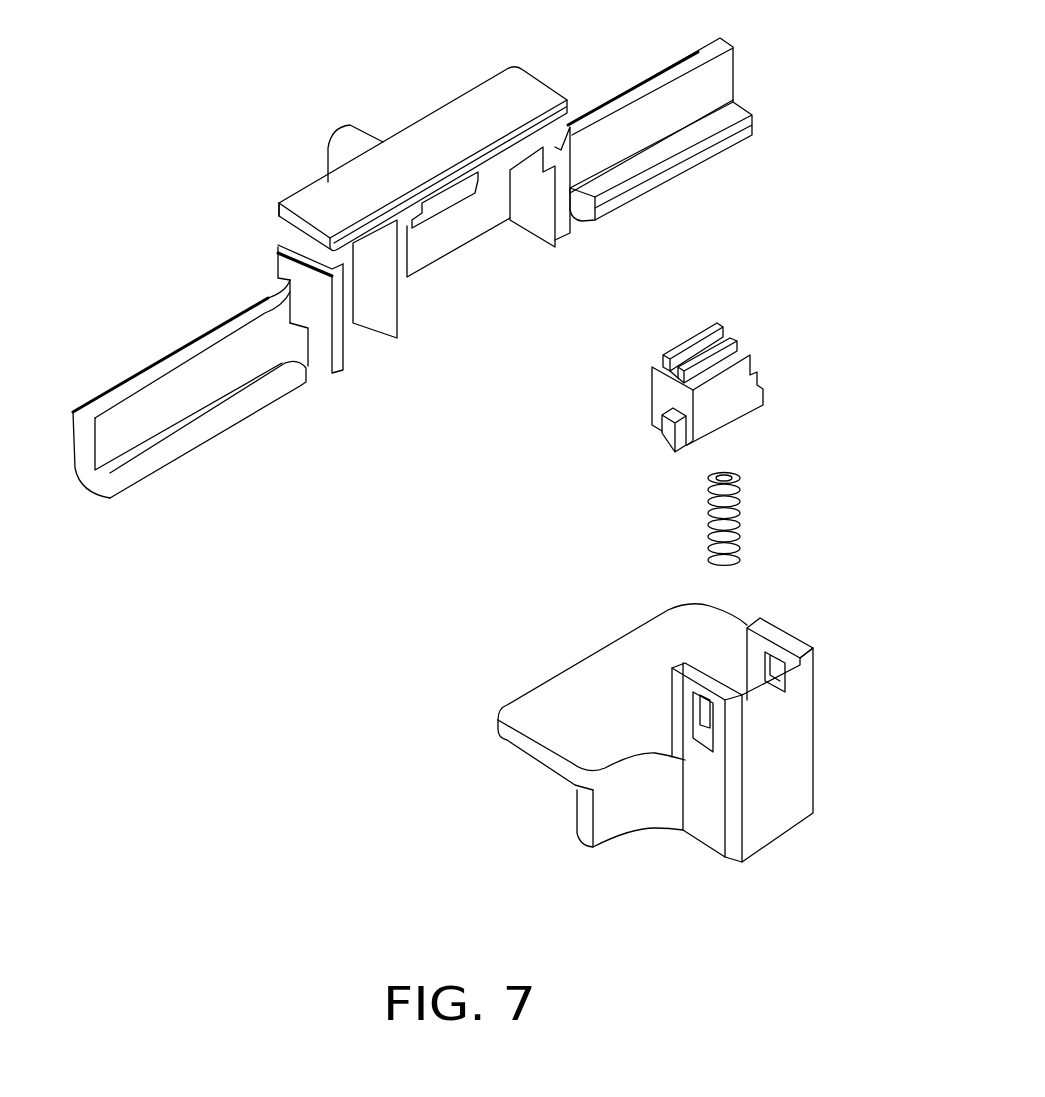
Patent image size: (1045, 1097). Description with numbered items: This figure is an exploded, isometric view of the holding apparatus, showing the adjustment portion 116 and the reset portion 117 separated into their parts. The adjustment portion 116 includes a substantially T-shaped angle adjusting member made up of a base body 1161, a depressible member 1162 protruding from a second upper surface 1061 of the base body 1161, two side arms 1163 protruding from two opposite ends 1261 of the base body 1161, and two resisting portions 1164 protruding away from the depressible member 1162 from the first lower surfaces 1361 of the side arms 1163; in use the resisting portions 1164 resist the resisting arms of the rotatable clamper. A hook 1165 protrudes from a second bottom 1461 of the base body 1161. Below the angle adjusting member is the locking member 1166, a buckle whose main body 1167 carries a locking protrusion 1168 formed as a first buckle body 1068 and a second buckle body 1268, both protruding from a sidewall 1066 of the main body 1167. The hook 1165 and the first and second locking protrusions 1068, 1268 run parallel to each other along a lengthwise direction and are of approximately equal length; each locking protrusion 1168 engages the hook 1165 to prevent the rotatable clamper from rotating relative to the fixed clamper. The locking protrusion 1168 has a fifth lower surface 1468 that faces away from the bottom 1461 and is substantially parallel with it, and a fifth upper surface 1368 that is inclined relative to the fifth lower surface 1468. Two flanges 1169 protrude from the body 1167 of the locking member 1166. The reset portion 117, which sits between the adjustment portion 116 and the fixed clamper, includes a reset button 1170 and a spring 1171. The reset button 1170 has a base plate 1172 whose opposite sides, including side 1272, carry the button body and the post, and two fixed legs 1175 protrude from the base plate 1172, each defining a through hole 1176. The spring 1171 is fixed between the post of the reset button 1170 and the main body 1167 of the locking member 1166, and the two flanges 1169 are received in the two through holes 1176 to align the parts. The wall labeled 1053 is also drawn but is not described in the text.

The adjustment portion 116 is at (237, 157).
The base body 1161 is at (467, 108).
The depressible member 1162 is at (347, 140).
The opposite ends 1261 is at (542, 90).
The second upper surface 1061 is at (297, 190).
The hook 1165 is at (445, 203).
The second bottom 1461 is at (490, 163).
The side arms 1163 is at (735, 70).
The first lower surfaces 1361 is at (600, 152).
The resisting portions 1164 is at (703, 133).
The locking protrusion 1168 is at (843, 260).
The locking member 1166 is at (742, 442).
The sidewall 1066 is at (697, 384).
The main body 1167 is at (735, 402).
The fifth upper surface 1368 is at (717, 427).
The flanges 1169 is at (762, 390).
The first buckle body 1068 is at (727, 317).
The second buckle body 1268 is at (740, 340).
The fifth lower surface 1468 is at (672, 376).
The reset portion 117 is at (848, 510).
The spring 1171 is at (747, 531).
The reset button 1170 is at (750, 593).
The side of the base plate 1272 is at (540, 705).
The base plate 1172 is at (517, 745).
The side wall 1053 is at (787, 758).
The fixed legs 1175 is at (767, 627).
The through hole 1176 is at (783, 672).